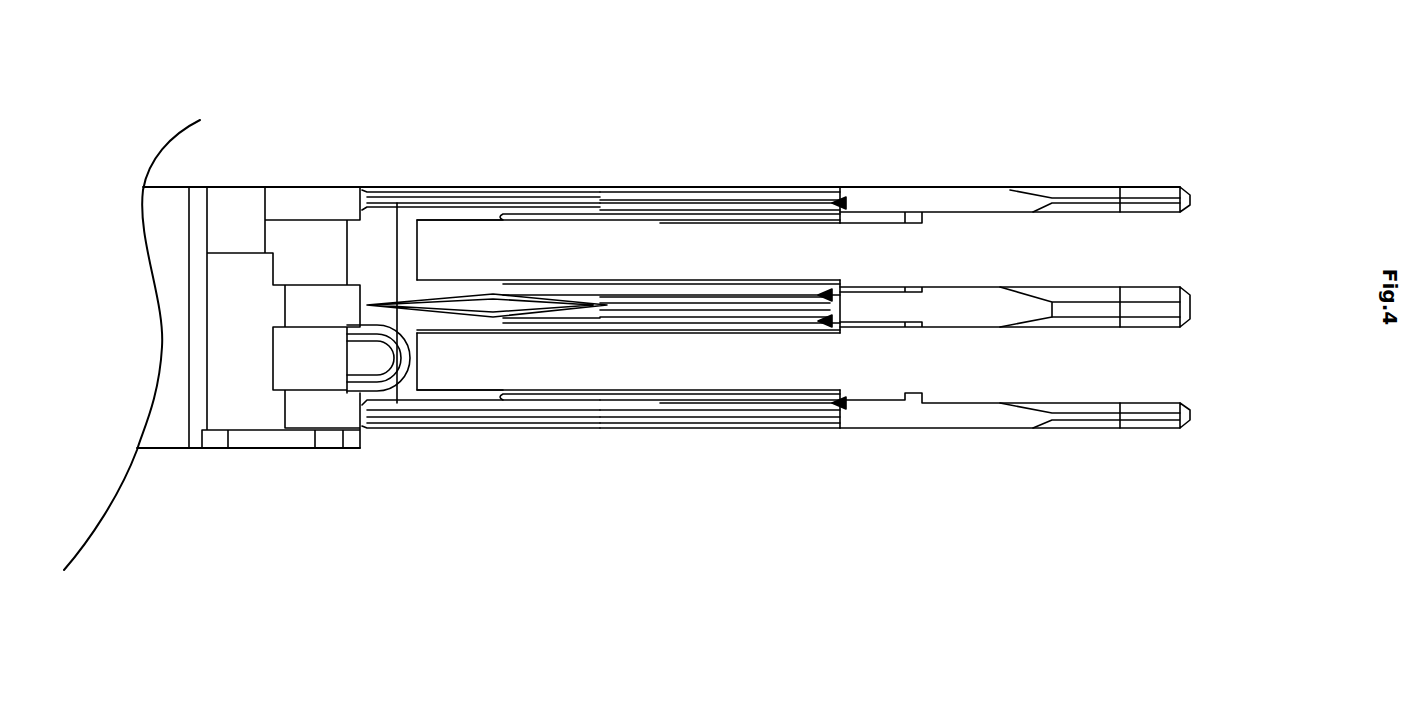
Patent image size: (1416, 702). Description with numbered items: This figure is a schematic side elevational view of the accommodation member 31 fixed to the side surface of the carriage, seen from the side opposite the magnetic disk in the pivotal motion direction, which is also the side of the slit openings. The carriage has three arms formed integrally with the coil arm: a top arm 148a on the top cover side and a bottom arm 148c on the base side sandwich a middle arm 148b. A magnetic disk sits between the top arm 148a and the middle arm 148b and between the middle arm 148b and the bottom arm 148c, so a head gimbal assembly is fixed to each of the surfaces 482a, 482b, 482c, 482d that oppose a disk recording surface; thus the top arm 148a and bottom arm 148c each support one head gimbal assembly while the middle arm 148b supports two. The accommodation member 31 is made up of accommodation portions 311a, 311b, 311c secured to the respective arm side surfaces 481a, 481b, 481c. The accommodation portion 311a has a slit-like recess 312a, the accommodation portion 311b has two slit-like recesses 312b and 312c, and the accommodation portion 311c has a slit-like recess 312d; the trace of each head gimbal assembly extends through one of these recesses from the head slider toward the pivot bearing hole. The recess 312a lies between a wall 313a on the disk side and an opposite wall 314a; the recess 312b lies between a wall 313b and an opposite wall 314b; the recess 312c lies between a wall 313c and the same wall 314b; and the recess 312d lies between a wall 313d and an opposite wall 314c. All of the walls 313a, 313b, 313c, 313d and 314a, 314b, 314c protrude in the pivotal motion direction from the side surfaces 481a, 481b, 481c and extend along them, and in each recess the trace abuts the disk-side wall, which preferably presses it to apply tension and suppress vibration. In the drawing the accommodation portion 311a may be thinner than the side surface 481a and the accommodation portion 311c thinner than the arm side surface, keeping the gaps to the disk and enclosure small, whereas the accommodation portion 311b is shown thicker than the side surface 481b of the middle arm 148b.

The accommodation member 31 is at (490, 136).
The accommodation portion 311a is at (513, 222).
The accommodation portion 311b is at (453, 315).
The accommodation portion 311c is at (473, 422).
The slit-like recess 312a is at (862, 208).
The slit-like recess 312b is at (855, 282).
The slit-like recess 312c is at (840, 323).
The slit-like recess 312d is at (853, 400).
The wall 313a is at (640, 207).
The wall 313b is at (723, 293).
The wall 313c is at (700, 322).
The wall 313d is at (620, 398).
The wall 314a is at (822, 190).
The wall 314b is at (793, 313).
The wall 314c is at (645, 422).
The side surface 481a is at (905, 199).
The side surface 481b is at (893, 315).
The side surface 481c is at (882, 410).
The surface 482a is at (1033, 213).
The surface 482b is at (1063, 289).
The surface 482c is at (1040, 327).
The surface 482d is at (980, 403).
The top arm 148a is at (1168, 187).
The middle arm 148b is at (1085, 298).
The bottom arm 148c is at (1090, 403).